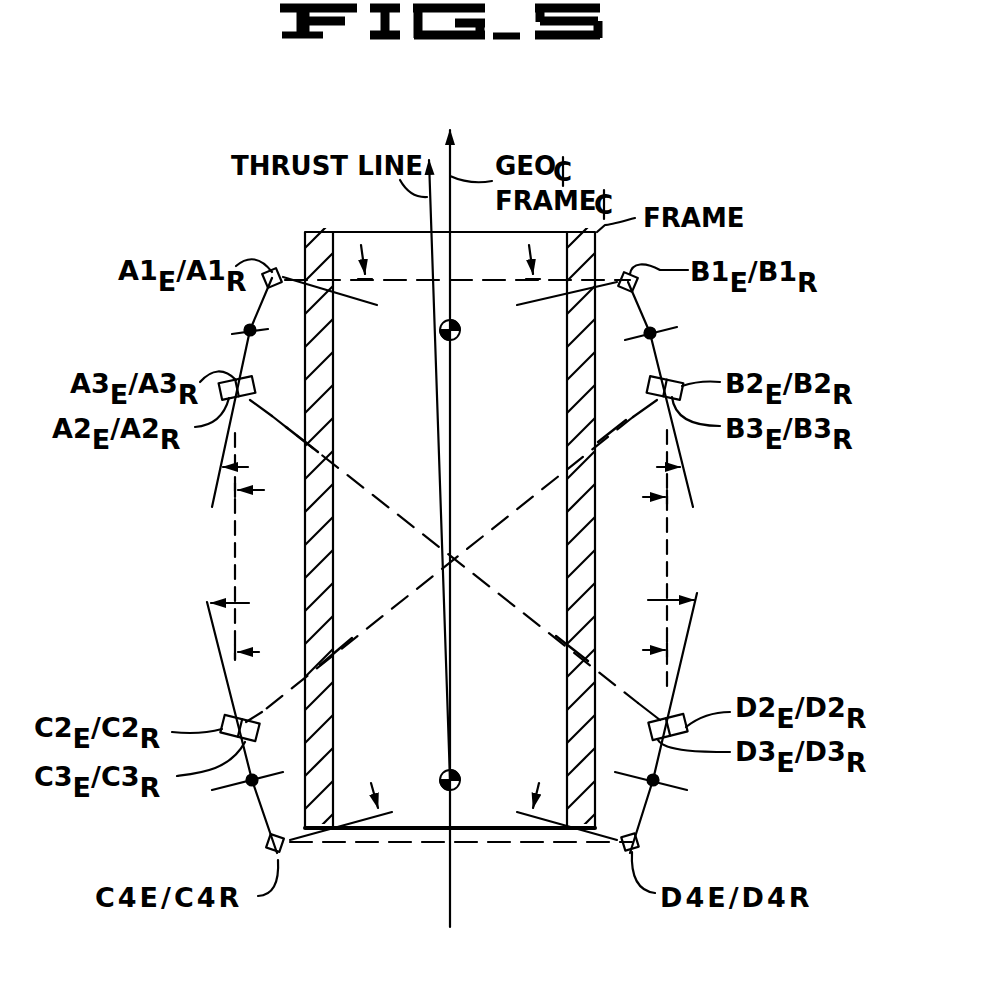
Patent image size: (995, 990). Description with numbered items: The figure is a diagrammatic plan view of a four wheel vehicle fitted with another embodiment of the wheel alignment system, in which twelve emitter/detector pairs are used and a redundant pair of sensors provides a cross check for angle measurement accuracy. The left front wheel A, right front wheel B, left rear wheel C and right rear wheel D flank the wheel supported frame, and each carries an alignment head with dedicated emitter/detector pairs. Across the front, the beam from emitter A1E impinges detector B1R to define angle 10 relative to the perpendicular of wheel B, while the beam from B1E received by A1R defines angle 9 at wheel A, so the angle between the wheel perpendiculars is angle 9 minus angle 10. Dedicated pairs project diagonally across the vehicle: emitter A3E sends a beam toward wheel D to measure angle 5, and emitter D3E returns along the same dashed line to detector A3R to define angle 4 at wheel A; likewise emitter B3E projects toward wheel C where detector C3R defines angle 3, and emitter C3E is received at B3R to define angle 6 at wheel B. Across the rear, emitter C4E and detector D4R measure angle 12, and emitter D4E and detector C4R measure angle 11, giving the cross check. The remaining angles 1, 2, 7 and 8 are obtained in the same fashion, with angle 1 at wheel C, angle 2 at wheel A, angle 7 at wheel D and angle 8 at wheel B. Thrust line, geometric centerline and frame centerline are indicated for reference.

The angle 1 is at (211, 655).
The angle 2 is at (208, 488).
The angle 3 is at (329, 651).
The angle 4 is at (290, 435).
The angle 5 is at (580, 650).
The angle 6 is at (604, 437).
The angle 7 is at (687, 652).
The angle 8 is at (692, 493).
The angle 9 is at (355, 304).
The angle 10 is at (521, 309).
The angle 11 is at (381, 847).
The angle 12 is at (532, 847).
The left front wheel A is at (232, 334).
The right front wheel B is at (662, 336).
The left rear wheel C is at (251, 782).
The right rear wheel D is at (655, 782).